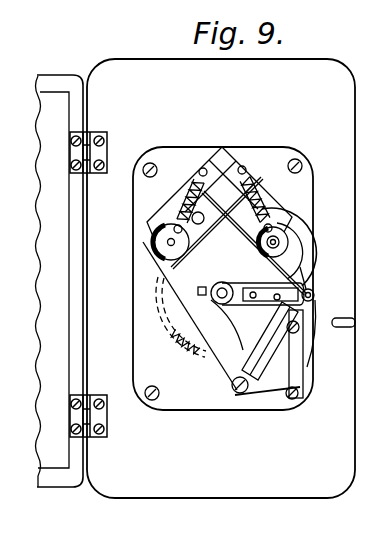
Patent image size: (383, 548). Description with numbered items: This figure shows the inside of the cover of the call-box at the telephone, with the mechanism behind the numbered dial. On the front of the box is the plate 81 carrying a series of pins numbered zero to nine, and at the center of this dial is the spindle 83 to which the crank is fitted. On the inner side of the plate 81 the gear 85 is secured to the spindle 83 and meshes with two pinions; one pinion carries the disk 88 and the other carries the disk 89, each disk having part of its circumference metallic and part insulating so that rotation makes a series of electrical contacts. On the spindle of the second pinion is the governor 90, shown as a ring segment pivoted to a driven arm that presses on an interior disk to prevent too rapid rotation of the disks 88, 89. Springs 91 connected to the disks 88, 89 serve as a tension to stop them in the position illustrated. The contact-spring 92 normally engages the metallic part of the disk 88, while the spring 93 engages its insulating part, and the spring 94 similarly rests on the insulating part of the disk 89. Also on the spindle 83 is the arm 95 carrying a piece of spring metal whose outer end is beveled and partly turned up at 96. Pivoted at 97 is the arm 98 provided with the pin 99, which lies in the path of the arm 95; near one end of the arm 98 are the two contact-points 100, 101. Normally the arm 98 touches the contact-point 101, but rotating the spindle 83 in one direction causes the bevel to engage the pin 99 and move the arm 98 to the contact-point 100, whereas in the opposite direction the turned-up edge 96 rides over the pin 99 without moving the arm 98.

The plate 81 is at (178, 406).
The spindle 83 is at (214, 298).
The gear 85 is at (176, 339).
The disk 88 is at (157, 246).
The disk 89 is at (283, 231).
The governor 90 is at (299, 250).
The springs 91 is at (191, 186).
The contact-spring 92 is at (176, 268).
The spring 93 is at (166, 213).
The spring 94 is at (242, 205).
The arm 95 is at (262, 307).
The turned-up edge 96 is at (338, 327).
The pivot 97 is at (305, 350).
The arm 98 is at (301, 396).
The pin 99 is at (315, 295).
The contact-point 100 is at (219, 385).
The contact-point 101 is at (257, 398).